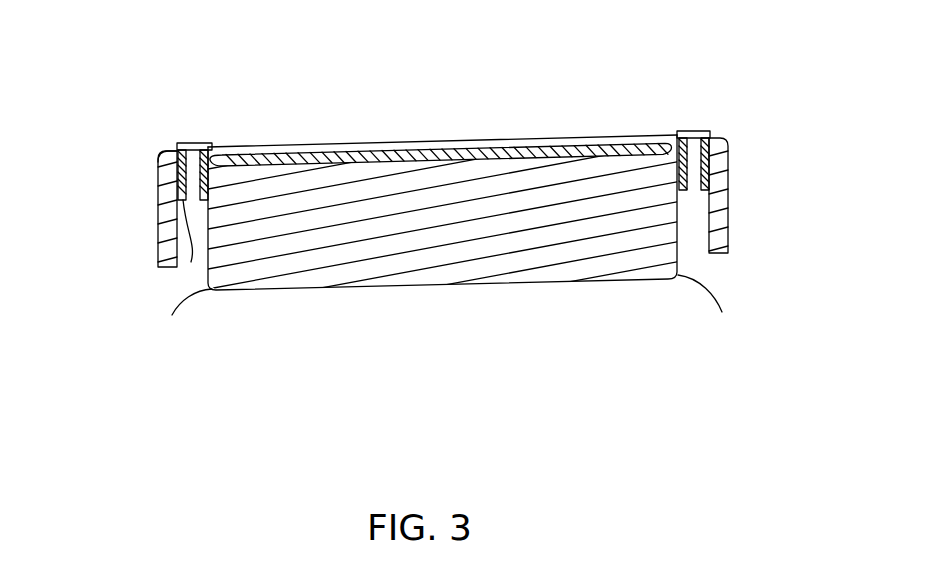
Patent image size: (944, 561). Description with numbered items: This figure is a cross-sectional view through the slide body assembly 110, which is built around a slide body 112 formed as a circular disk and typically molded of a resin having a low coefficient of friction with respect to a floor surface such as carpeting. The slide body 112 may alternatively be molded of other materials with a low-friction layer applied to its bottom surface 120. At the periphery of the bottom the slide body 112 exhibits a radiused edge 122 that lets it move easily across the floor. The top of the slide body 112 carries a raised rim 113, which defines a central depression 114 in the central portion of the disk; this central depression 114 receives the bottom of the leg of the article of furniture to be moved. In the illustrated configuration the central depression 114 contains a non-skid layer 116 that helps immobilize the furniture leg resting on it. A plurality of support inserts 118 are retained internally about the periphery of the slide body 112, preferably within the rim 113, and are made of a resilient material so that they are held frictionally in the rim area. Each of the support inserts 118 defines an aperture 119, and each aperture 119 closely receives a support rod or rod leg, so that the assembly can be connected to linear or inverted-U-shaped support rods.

The slide body assembly 110 is at (740, 198).
The slide body 112 is at (157, 247).
The raised rim 113 is at (163, 153).
The central depression 114 is at (514, 116).
The non-skid layer 116 is at (322, 153).
The support inserts 118 is at (191, 262).
The aperture 119 is at (193, 145).
The bottom surface 120 is at (353, 296).
The radiused edge 122 is at (172, 315).